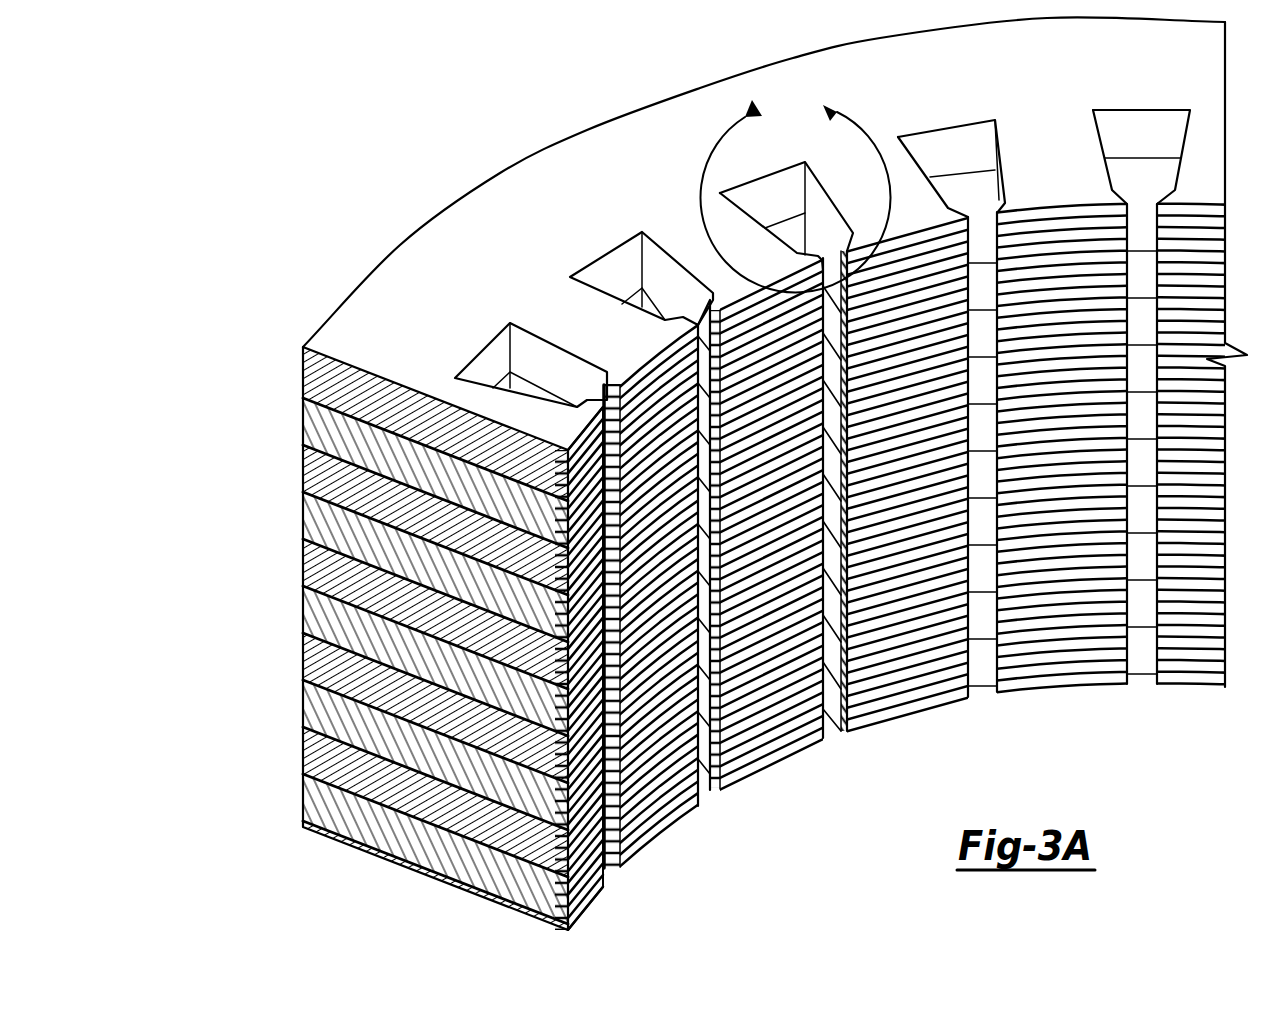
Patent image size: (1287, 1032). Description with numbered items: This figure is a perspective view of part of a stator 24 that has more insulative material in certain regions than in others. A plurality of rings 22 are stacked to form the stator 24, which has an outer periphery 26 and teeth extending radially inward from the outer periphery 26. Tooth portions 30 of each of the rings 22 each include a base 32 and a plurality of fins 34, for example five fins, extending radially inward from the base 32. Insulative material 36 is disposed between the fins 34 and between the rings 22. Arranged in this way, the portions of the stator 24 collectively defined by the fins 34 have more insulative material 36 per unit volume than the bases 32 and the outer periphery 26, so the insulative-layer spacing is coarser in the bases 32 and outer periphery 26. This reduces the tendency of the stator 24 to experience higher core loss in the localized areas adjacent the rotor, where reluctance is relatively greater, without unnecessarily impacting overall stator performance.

The ring 22 is at (990, 250).
The stator 24 is at (734, 473).
The outer periphery 26 is at (380, 297).
The tooth portion 30 is at (619, 343).
The base 32 is at (518, 347).
The fin 34 is at (662, 802).
The insulative material 36 is at (753, 727).